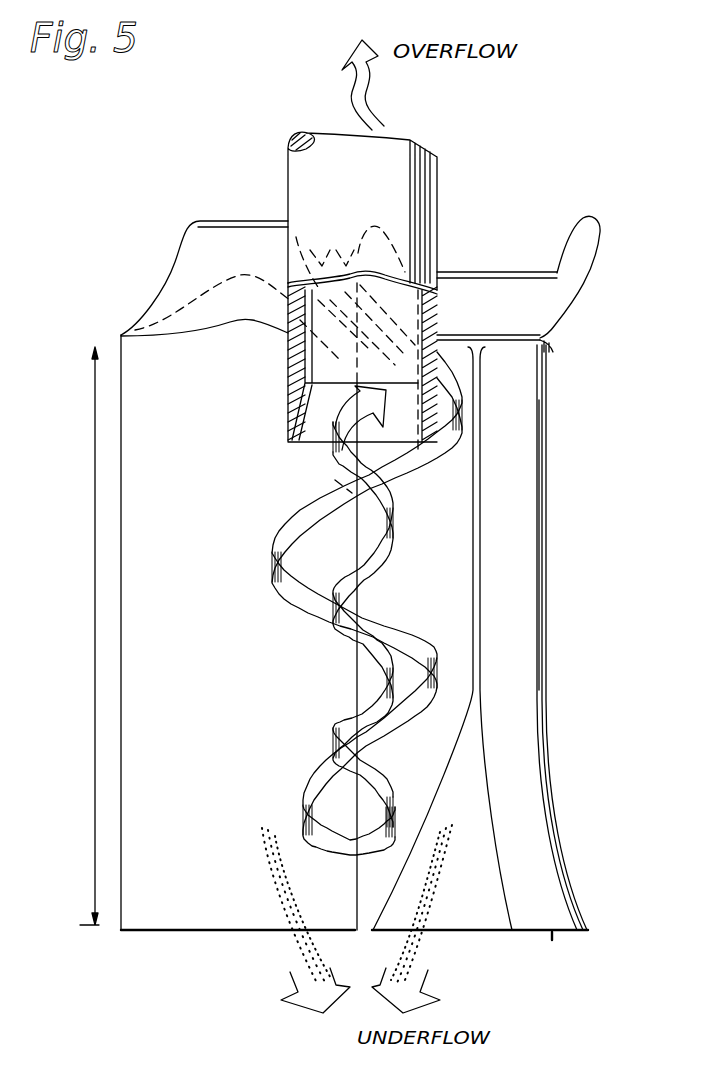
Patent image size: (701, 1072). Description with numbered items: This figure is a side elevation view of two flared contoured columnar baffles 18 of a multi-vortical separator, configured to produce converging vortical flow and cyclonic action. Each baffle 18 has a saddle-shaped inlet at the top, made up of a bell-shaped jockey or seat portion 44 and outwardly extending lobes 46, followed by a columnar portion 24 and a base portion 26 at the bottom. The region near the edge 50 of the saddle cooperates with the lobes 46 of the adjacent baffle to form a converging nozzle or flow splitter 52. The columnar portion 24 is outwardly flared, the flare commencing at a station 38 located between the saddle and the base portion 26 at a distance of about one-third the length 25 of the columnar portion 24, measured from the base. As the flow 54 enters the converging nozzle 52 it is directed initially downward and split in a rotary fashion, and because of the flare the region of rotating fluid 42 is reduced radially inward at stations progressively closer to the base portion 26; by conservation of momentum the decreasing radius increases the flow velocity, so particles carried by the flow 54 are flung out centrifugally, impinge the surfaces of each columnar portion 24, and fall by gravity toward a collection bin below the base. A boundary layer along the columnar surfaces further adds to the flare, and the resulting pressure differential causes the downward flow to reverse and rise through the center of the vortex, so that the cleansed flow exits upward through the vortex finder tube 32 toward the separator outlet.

The contoured columnar baffle 18 is at (528, 473).
The columnar portion 24 is at (545, 592).
The length of the columnar portion 25 is at (89, 638).
The base portion 26 is at (157, 930).
The vortex finder tube 32 is at (437, 196).
The station 38 is at (480, 650).
The region of rotating fluid 42 is at (403, 593).
The bell-shaped jockey portion 44 is at (185, 302).
The lobe 46 is at (590, 238).
The edge of the saddle portion 50 is at (120, 336).
The converging nozzle 52 is at (333, 245).
The flow 54 is at (377, 753).